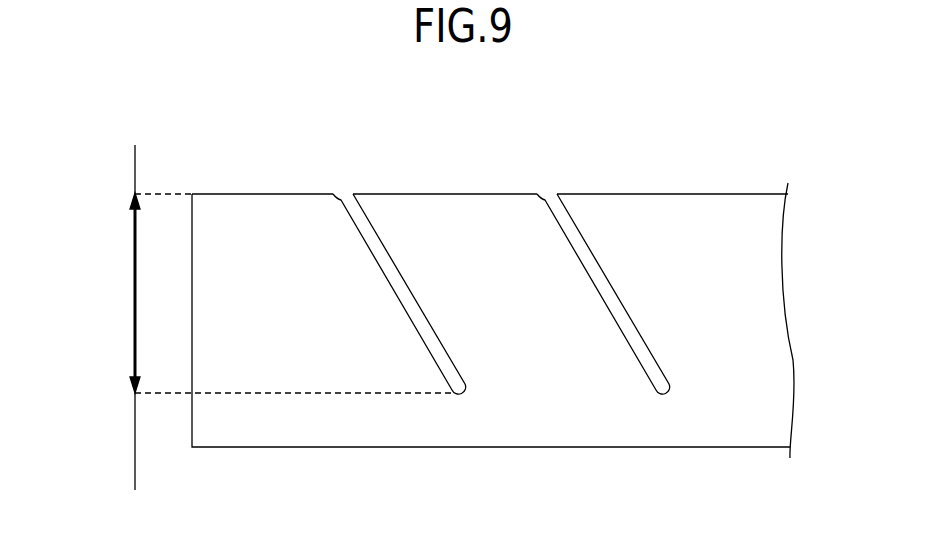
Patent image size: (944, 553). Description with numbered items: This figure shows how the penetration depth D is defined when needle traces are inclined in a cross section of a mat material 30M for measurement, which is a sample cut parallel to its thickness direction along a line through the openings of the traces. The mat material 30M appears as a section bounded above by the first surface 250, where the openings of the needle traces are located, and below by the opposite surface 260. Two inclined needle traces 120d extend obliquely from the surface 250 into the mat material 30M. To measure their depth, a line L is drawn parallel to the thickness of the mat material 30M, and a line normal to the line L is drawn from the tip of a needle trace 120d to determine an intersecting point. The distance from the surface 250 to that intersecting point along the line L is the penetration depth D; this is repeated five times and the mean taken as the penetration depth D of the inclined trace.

The mat material for measurement 30M is at (621, 98).
The first surface 250 is at (238, 192).
The needle trace 120d is at (395, 270).
The surface 260 is at (247, 448).
The penetration depth D is at (284, 317).
The line parallel to the thickness L is at (134, 506).